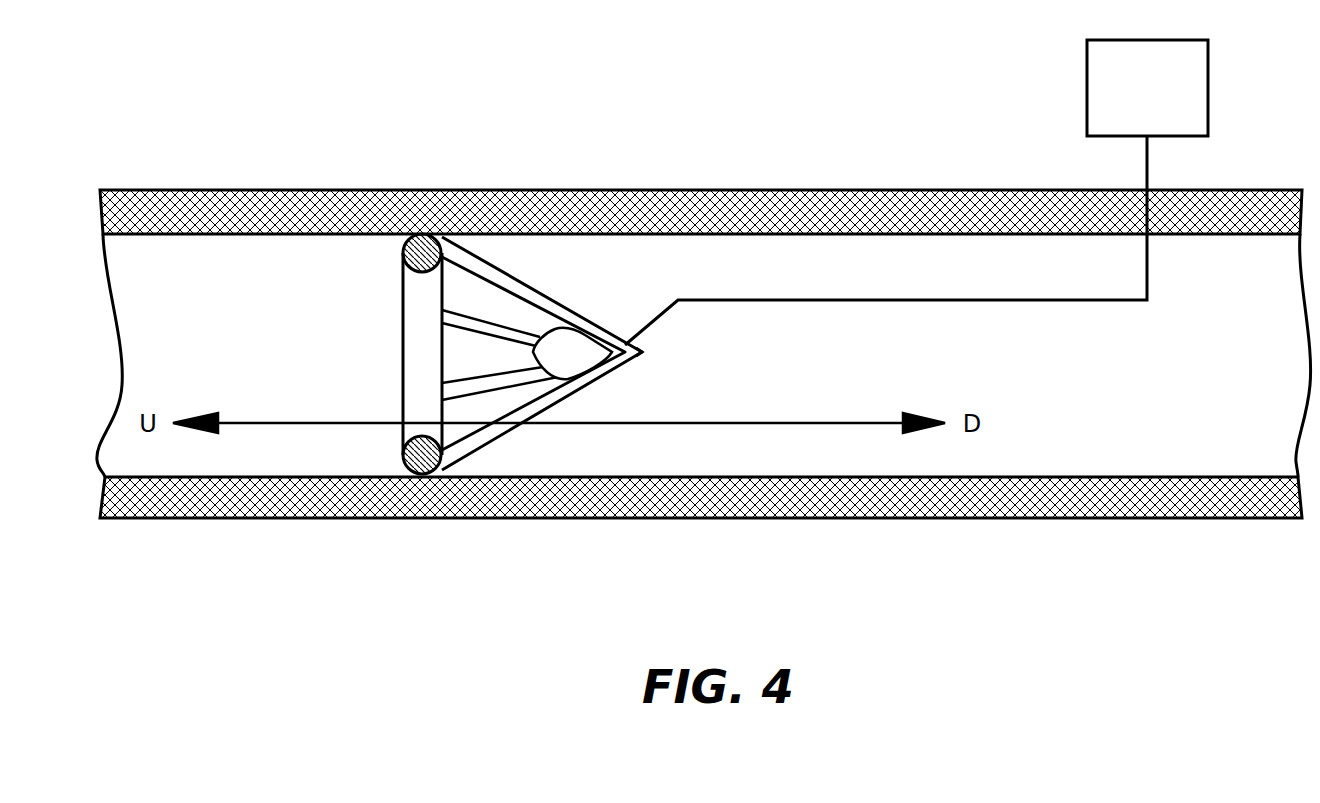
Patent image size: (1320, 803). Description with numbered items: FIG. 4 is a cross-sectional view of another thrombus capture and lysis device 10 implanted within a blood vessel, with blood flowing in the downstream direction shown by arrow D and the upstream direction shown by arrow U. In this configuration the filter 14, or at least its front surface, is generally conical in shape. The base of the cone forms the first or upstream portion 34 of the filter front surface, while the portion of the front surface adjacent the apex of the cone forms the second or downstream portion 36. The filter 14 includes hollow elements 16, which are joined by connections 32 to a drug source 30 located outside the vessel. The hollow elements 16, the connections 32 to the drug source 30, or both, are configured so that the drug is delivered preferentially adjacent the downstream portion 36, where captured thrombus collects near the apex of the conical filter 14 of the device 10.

The device 10 is at (475, 294).
The filter 14 is at (550, 297).
The hollow elements 16 is at (497, 273).
The drug source 30 is at (1147, 88).
The connections 32 is at (1023, 305).
The upstream portion 34 is at (402, 290).
The downstream portion 36 is at (645, 353).